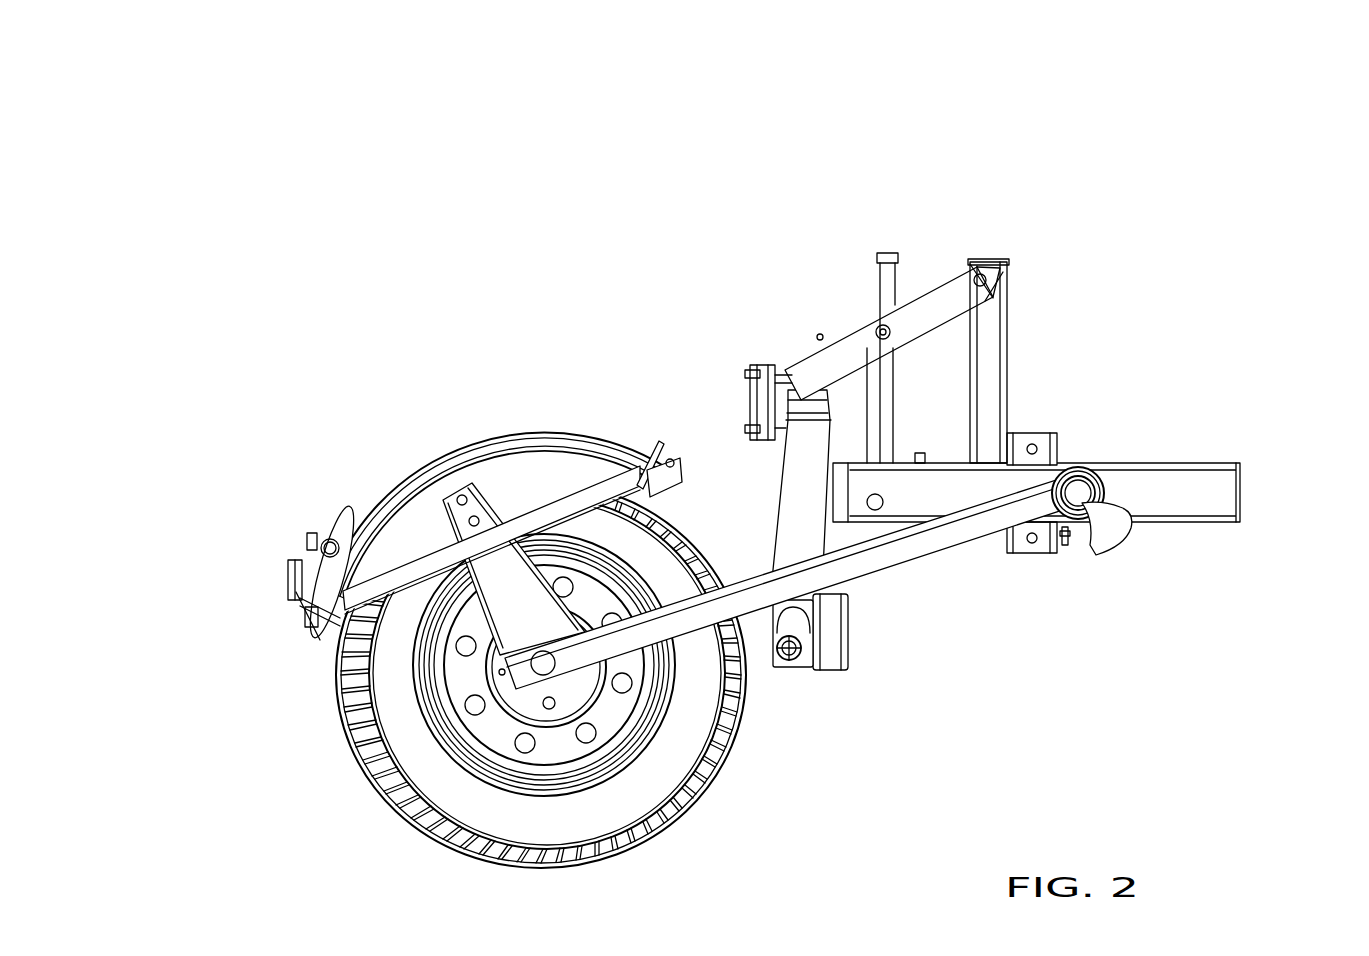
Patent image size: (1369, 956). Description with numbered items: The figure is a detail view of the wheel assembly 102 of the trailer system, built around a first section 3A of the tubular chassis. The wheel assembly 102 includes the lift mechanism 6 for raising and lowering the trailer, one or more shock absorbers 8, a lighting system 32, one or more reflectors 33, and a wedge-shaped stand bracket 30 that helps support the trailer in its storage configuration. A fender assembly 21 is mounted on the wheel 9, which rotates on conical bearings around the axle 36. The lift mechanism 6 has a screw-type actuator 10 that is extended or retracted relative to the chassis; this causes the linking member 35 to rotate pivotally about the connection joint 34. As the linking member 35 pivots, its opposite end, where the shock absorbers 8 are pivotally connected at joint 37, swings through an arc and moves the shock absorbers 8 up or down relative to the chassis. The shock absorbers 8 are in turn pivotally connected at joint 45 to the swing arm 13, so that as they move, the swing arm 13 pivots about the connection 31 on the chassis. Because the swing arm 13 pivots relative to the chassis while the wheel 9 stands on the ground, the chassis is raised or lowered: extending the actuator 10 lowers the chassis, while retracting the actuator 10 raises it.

The wheel assembly 102 is at (310, 160).
The lift mechanism 6 is at (872, 195).
The shock absorbers 8 is at (778, 492).
The wheel 9 is at (675, 815).
The actuator 10 is at (892, 248).
The swing arm 13 is at (873, 582).
The fender assembly 21 is at (450, 442).
The stand bracket 30 is at (1109, 548).
The connection 31 is at (1090, 452).
The lighting system 32 is at (741, 363).
The reflectors 33 is at (300, 525).
The connection joint 34 is at (1000, 262).
The linking member 35 is at (850, 308).
The axle 36 is at (510, 690).
The joint 37 is at (802, 352).
The joint 45 is at (797, 668).
The first section 3A is at (1190, 465).